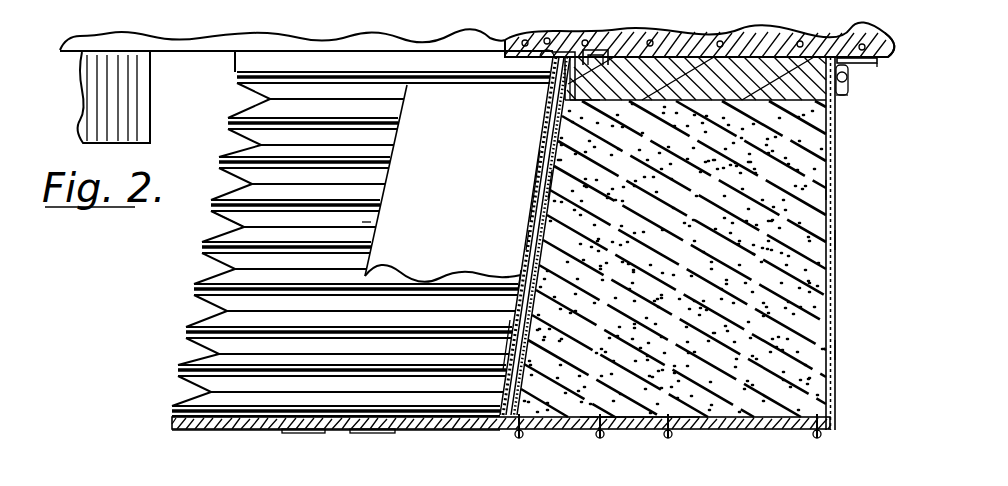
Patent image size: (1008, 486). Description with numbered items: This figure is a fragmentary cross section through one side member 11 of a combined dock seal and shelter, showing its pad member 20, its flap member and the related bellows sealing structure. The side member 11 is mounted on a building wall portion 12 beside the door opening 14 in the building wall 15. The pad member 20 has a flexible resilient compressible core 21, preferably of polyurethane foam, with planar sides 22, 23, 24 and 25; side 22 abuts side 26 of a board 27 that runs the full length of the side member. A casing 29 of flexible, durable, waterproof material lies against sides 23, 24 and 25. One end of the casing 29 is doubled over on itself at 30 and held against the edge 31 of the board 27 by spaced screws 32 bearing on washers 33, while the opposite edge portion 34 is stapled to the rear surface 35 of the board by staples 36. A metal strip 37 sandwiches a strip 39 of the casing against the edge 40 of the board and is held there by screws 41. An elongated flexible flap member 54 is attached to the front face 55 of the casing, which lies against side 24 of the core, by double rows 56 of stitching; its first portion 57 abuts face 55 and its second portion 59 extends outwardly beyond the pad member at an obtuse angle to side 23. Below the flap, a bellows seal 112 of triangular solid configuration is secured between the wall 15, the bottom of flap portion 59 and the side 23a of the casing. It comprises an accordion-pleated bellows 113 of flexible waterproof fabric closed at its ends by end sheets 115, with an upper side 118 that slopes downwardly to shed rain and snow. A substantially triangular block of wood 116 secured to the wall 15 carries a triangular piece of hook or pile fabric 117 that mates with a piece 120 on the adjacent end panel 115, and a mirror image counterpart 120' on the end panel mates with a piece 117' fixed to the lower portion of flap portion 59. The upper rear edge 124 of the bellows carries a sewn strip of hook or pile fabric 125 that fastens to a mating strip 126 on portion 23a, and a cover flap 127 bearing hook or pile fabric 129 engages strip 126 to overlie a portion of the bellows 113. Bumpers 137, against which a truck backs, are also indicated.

The side member 11 is at (836, 288).
The building wall portion 12 is at (880, 62).
The door opening 14 is at (470, 40).
The building wall 15 is at (888, 46).
The pad member 20 is at (836, 238).
The core 21 is at (702, 264).
The side of core 22 is at (742, 100).
The side of core 23 is at (565, 200).
The side of casing 23a is at (520, 245).
The side of core 24 is at (665, 416).
The side of core 25 is at (826, 190).
The side of board 26 is at (650, 102).
The board 27 is at (766, 60).
The casing 29 is at (836, 350).
The doubled-over end portion of casing 30 is at (840, 40).
The edge of board 31 is at (840, 100).
The screws 32 is at (848, 78).
The washers 33 is at (848, 92).
The edge portion of casing 34 is at (586, 50).
The rear surface of board 35 is at (640, 50).
The staples 36 is at (600, 55).
The metal strip 37 is at (560, 15).
The strip of casing 39 is at (580, 104).
The edge of board 40 is at (562, 100).
The screws 41 is at (553, 95).
The flexible flap member 54 is at (492, 430).
The front face of casing 55 is at (600, 416).
The double rows of stitching 56 is at (521, 432).
The first portion of flap member 57 is at (714, 432).
The second portion of flap member 59 is at (180, 429).
The bellows seal 112 is at (208, 264).
The bellows 113 is at (212, 220).
The end sheets 115 is at (237, 85).
The block of wood 116 is at (340, 48).
The piece of hook or pile fabric 117 is at (364, 40).
The piece of hook or pile fabric 117' is at (294, 412).
The upper side of bellows seal 118 is at (362, 222).
The mating piece of hook or pile fabric 120 is at (359, 82).
The mating piece of hook or pile fabric 120' is at (295, 395).
The upper rear edge of bellows 124 is at (516, 285).
The strip of hook or pile fabric 125 is at (505, 322).
The mating strip of hook or pile fabric 126 is at (530, 222).
The cover flap 127 is at (447, 154).
The piece of hook or pile fabric 129 is at (542, 165).
The bumpers 137 is at (82, 90).